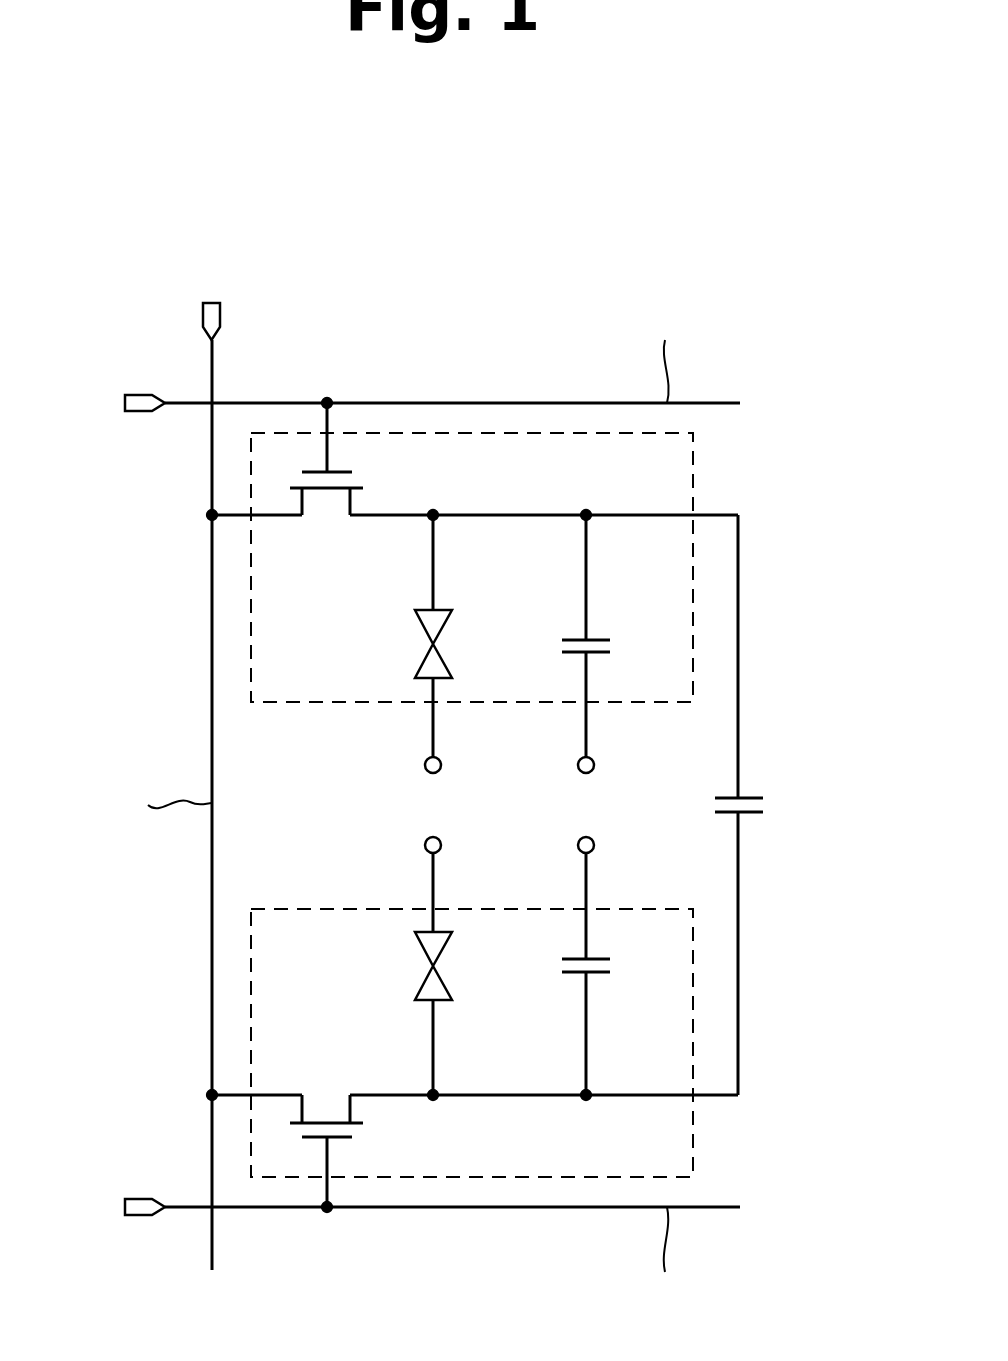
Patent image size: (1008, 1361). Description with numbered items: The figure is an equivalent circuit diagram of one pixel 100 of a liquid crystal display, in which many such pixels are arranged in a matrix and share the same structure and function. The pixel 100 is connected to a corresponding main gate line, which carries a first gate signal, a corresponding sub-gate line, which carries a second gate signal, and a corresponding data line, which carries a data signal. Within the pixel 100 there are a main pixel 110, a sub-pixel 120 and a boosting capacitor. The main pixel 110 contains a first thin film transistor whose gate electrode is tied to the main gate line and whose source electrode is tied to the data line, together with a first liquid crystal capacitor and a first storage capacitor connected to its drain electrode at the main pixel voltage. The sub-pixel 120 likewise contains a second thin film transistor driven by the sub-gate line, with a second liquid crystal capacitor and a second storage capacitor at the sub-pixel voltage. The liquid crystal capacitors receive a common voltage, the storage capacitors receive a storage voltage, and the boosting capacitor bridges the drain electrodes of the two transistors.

The pixel 100 is at (465, 355).
The main pixel 110 is at (693, 462).
The sub-pixel 120 is at (693, 1143).